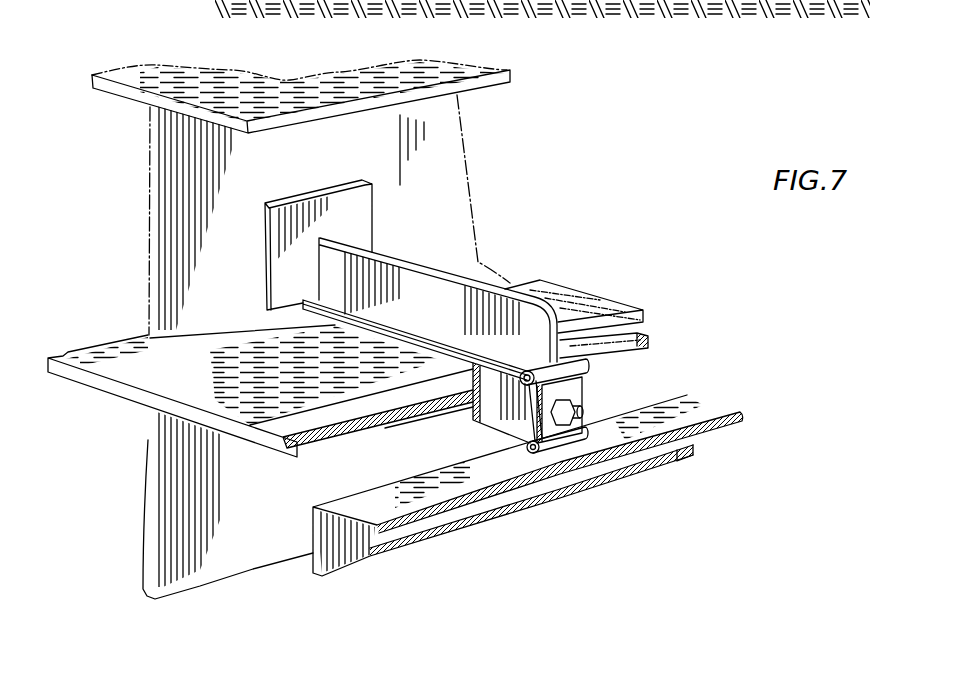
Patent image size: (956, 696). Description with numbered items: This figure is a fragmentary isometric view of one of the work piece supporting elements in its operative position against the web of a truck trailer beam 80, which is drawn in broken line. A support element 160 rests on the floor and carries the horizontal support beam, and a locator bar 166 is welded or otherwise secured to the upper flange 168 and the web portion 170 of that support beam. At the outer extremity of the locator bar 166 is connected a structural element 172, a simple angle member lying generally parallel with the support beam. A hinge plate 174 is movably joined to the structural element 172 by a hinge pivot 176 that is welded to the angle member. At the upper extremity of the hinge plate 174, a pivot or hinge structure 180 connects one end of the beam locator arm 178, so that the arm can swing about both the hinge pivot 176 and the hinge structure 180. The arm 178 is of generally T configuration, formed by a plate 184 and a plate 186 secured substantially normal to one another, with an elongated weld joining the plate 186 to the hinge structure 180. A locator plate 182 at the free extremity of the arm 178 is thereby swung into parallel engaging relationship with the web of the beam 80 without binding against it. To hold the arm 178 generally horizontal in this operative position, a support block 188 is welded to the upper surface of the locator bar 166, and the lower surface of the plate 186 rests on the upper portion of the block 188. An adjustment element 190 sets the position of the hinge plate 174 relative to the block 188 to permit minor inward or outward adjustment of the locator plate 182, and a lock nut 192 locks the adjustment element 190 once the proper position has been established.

The truck trailer beam 80 is at (157, 67).
The support element 160 is at (777, 0).
The locator bar 166 is at (420, 435).
The upper flange 168 is at (293, 458).
The web portion 170 is at (197, 563).
The structural element 172 is at (707, 427).
The hinge plate 174 is at (577, 392).
The hinge pivot 176 is at (593, 438).
The beam locator arm 178 is at (575, 312).
The pivot or hinge structure 180 is at (590, 372).
The locator plate 182 is at (358, 211).
The plate 184 is at (440, 292).
The plate 186 is at (338, 320).
The support block 188 is at (483, 408).
The adjustment element 190 is at (575, 420).
The lock nut 192 is at (550, 420).